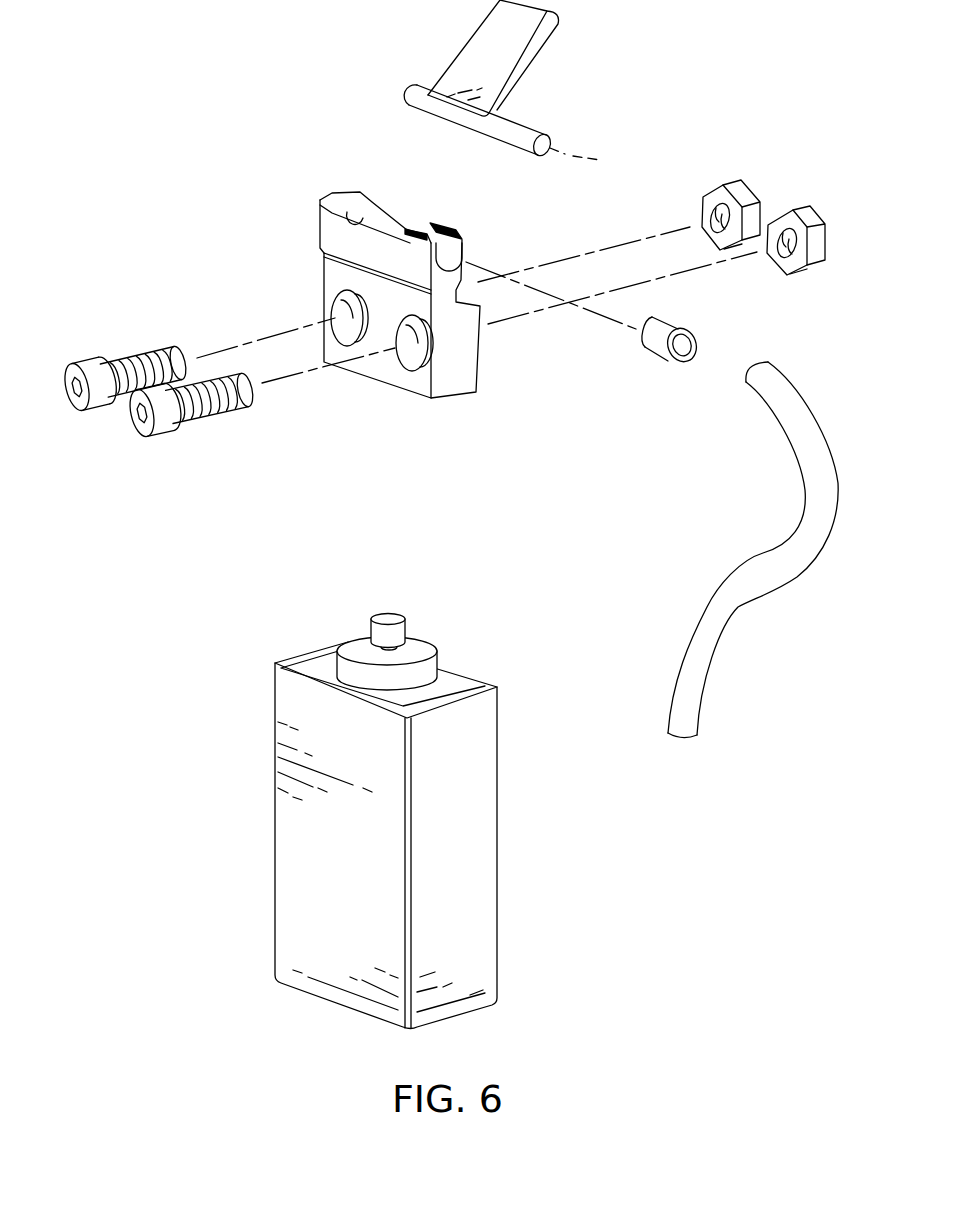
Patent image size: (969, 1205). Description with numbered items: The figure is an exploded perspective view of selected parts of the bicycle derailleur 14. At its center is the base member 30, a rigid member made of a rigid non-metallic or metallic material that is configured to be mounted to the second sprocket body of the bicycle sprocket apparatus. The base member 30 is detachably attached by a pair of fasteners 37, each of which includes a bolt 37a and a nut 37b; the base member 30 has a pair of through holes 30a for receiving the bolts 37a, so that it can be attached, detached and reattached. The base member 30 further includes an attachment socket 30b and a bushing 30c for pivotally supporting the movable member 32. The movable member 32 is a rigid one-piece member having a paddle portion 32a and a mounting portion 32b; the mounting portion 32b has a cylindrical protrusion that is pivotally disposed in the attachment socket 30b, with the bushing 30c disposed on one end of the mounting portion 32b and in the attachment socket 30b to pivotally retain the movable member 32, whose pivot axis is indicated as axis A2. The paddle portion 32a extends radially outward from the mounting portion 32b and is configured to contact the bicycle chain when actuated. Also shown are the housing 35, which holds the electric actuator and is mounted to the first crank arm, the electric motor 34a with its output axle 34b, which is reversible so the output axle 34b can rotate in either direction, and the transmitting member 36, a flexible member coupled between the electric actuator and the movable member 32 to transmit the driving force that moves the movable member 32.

The bicycle derailleur 14 is at (196, 70).
The base member 30 is at (390, 327).
The through hole 30a is at (360, 310).
The attachment socket 30b is at (452, 250).
The bushing 30c is at (664, 363).
The movable member 32 is at (505, 90).
The paddle portion 32a is at (481, 40).
The mounting portion 32b is at (507, 143).
The electric motor 34a is at (434, 648).
The output axle 34b is at (376, 613).
The housing 35 is at (272, 745).
The transmitting member 36 is at (701, 592).
The fasteners 37 is at (158, 417).
The bolt 37a is at (128, 362).
The nut 37b is at (797, 208).
The axis A2 is at (600, 158).